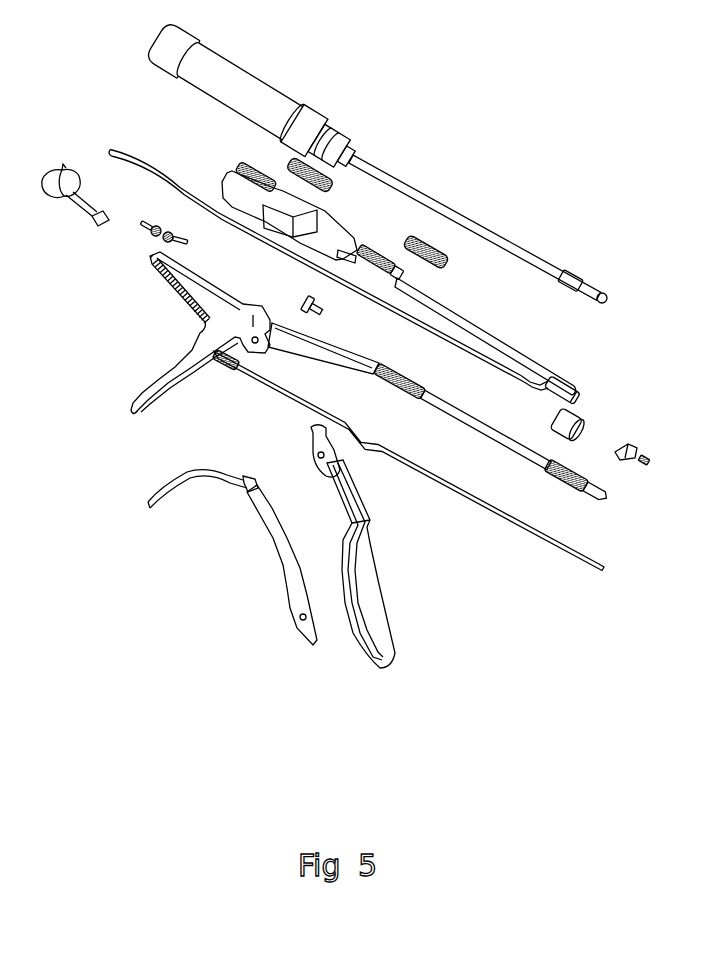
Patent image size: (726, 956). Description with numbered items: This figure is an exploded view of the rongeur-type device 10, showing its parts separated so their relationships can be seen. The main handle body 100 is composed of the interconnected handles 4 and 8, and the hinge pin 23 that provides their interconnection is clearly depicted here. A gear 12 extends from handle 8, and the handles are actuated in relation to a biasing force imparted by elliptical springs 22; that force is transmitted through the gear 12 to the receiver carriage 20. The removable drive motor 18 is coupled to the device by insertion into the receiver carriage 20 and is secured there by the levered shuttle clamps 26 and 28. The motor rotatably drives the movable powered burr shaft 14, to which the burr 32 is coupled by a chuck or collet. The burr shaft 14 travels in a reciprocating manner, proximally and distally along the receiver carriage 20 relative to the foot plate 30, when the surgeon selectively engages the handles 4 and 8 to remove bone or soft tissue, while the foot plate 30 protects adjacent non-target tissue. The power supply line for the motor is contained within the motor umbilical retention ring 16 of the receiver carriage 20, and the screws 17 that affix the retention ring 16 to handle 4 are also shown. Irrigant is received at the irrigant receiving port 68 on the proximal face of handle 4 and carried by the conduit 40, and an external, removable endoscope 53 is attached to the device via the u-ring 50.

The rongeur-type device 10 is at (536, 107).
The removable drive motor 18 is at (262, 80).
The movable powered burr shaft 14 is at (512, 233).
The burr 32 is at (608, 288).
The levered shuttle clamp 26 is at (277, 157).
The receiver carriage 20 is at (543, 353).
The levered shuttle clamp 28 is at (463, 268).
The removable endoscope 53 is at (547, 388).
The main handle body 100 is at (459, 376).
The motor umbilical retention ring 16 is at (98, 212).
The screws 17 is at (148, 223).
The irrigant receiving port 68 is at (143, 263).
The handle 4 is at (178, 375).
The hinge pin 23 is at (303, 298).
The elliptical springs 22 is at (300, 427).
The handle 8 is at (382, 600).
The gear 12 is at (283, 587).
The conduit 40 is at (576, 562).
The u-ring 50 is at (582, 413).
The foot plate 30 is at (648, 462).